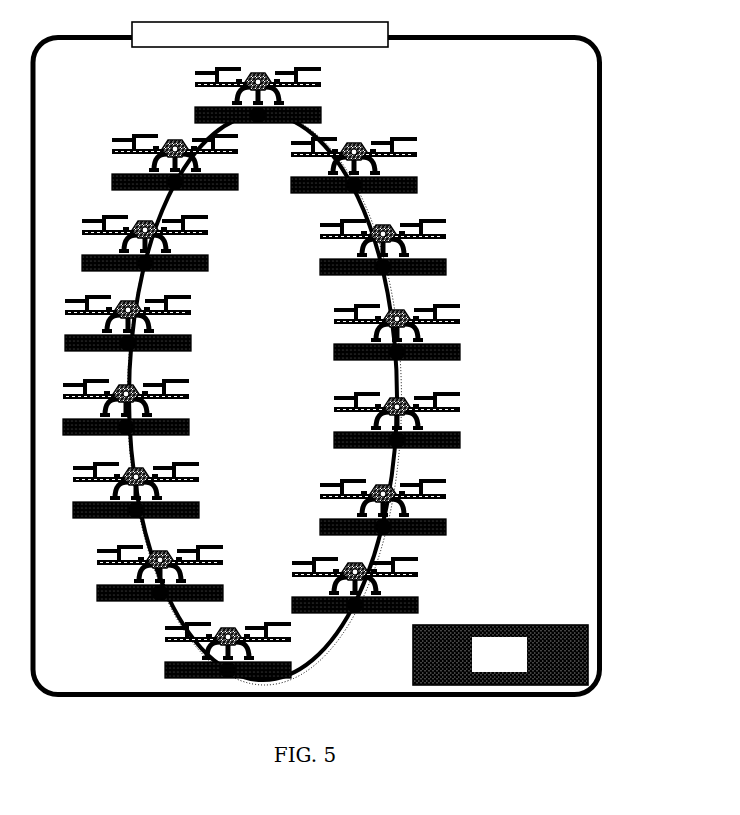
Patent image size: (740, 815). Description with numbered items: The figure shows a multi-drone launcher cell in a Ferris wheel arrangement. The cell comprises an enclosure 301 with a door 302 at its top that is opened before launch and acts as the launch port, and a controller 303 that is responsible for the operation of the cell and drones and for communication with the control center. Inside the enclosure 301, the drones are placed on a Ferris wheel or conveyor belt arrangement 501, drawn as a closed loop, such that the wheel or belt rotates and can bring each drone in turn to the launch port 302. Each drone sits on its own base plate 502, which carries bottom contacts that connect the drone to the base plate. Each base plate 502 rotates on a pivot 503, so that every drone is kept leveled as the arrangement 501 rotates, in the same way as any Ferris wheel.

The enclosure 301 is at (612, 115).
The door 302 is at (260, 34).
The controller 303 is at (500, 655).
The Ferris wheel or conveyor belt arrangement 501 is at (340, 643).
The base plate 502 is at (463, 440).
The pivot 503 is at (153, 608).